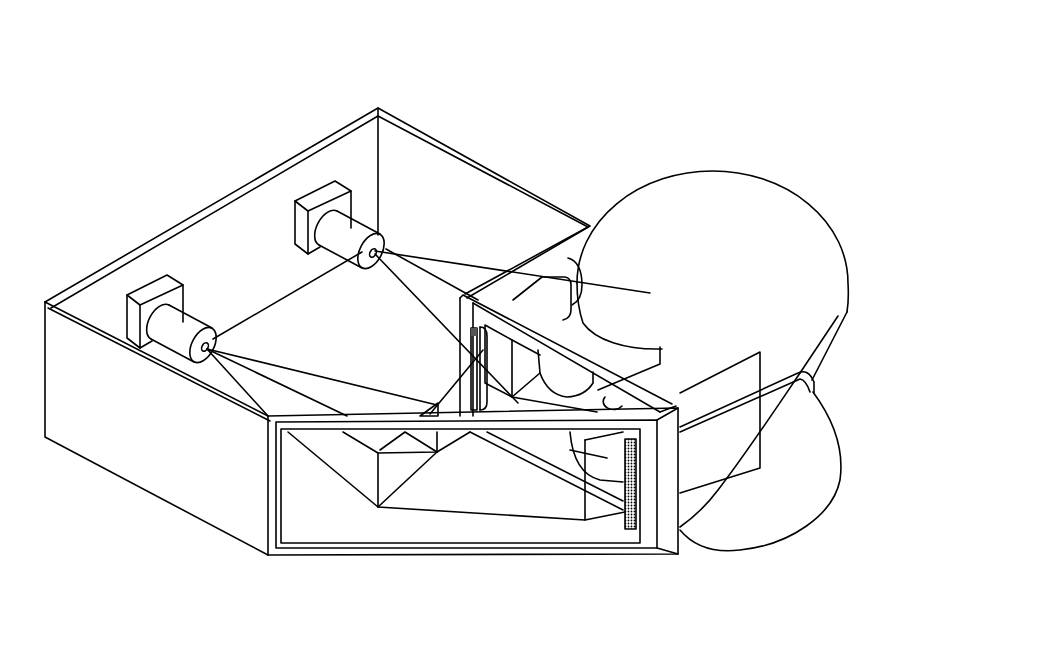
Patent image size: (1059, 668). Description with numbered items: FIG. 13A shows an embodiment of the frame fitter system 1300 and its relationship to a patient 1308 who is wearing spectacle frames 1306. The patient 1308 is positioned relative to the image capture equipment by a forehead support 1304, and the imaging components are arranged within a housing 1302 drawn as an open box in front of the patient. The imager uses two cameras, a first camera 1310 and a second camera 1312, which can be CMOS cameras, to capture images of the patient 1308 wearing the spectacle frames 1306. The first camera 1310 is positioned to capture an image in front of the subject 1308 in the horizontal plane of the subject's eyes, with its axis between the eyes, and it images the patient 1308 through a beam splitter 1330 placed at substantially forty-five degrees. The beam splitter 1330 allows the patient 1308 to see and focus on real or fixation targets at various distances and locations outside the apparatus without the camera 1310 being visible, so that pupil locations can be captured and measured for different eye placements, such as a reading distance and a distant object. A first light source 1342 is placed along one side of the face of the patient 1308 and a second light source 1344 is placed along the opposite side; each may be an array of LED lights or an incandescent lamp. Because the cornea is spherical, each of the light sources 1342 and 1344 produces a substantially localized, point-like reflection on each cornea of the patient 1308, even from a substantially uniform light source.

The frame fitter system 1300 is at (612, 58).
The housing box 1302 is at (167, 473).
The forehead support 1304 is at (597, 340).
The spectacle frames 1306 is at (818, 366).
The patient 1308 is at (725, 178).
The first camera 1310 is at (138, 282).
The second camera 1312 is at (308, 185).
The beam splitter 1330 is at (317, 533).
The first light source 1342 is at (477, 292).
The second light source 1344 is at (633, 540).